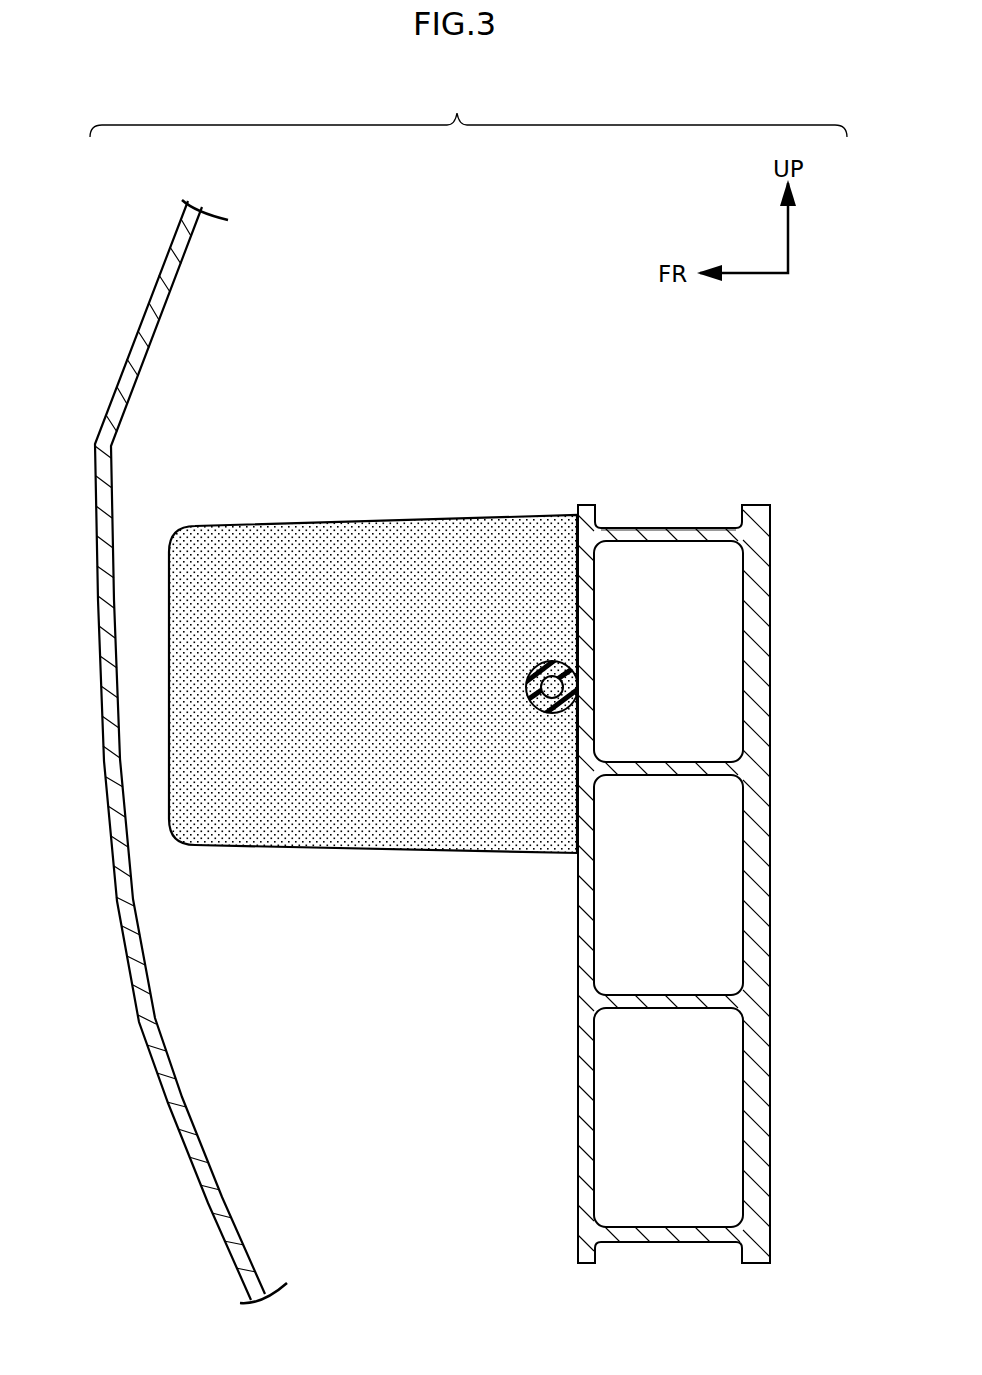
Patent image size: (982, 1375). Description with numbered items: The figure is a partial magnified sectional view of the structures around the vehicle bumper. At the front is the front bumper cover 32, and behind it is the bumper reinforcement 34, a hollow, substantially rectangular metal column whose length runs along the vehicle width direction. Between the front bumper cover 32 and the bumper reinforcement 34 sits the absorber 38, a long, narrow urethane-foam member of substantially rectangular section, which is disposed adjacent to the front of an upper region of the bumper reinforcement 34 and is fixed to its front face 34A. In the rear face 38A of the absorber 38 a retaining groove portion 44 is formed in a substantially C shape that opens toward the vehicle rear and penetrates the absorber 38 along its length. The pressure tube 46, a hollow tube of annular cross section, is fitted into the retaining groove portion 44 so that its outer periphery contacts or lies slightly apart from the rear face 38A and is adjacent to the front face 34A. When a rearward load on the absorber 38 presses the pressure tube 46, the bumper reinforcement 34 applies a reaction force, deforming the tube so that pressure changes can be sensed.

The front bumper cover 32 is at (143, 322).
The bumper reinforcement 34 is at (770, 513).
The front face 34A is at (578, 1105).
The absorber 38 is at (258, 524).
The rear face 38A is at (617, 541).
The retaining groove portion 44 is at (553, 714).
The pressure tube 46 is at (553, 661).